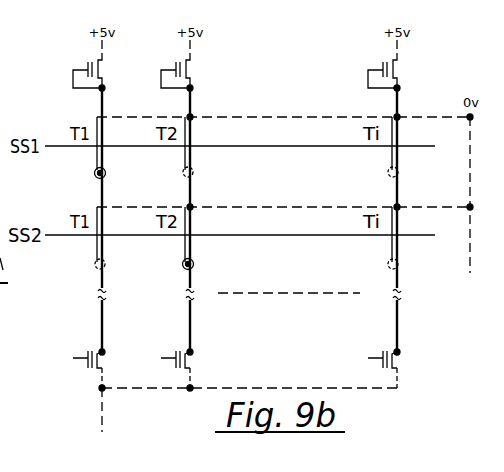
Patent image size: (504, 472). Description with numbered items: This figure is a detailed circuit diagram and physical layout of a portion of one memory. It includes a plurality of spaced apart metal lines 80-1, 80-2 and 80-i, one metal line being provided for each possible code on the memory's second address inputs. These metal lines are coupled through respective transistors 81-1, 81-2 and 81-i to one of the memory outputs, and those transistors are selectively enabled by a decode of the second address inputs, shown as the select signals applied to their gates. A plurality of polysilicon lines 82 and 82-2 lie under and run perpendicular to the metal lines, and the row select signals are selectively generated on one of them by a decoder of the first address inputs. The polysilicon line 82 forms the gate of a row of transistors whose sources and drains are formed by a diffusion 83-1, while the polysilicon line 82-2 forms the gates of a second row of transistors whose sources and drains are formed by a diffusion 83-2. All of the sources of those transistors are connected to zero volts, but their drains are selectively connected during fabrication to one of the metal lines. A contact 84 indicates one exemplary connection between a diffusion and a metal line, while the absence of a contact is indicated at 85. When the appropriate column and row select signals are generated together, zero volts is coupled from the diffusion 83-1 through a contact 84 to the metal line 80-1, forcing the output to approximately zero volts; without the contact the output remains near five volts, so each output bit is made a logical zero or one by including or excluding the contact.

The polysilicon line 82 is at (234, 146).
The polysilicon line 82-2 is at (240, 236).
The diffusion 83-1 is at (118, 118).
The diffusion 83-2 is at (118, 209).
The contact 84 is at (94, 174).
The absence of a contact 85 is at (194, 173).
The metal line 80-1 is at (102, 320).
The metal line 80-2 is at (190, 320).
The metal line 80-i is at (397, 320).
The transistor 81-1 is at (103, 361).
The transistor 81-2 is at (191, 361).
The transistor 81-i is at (398, 361).